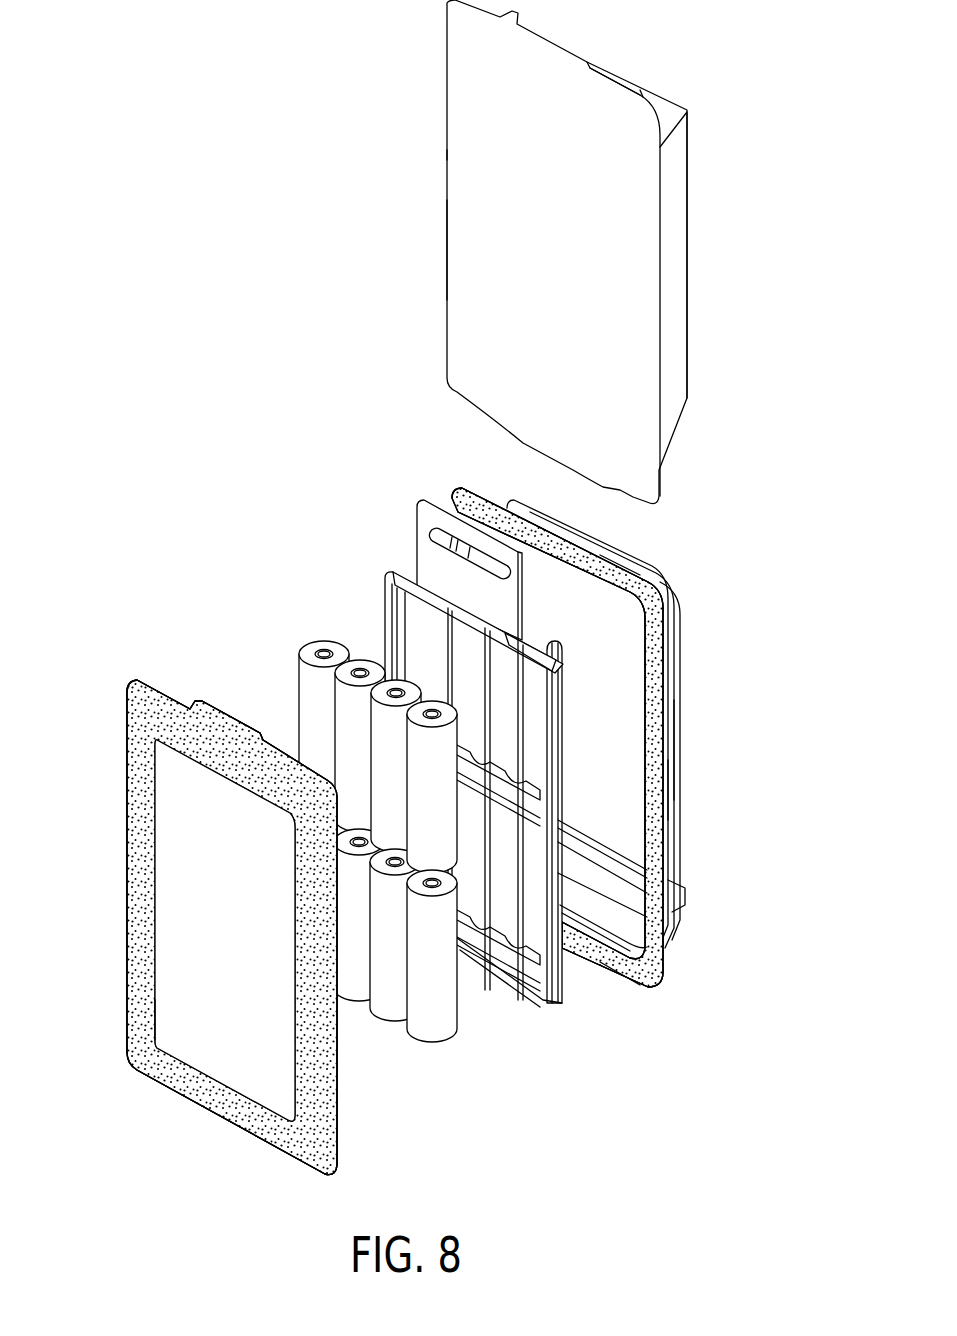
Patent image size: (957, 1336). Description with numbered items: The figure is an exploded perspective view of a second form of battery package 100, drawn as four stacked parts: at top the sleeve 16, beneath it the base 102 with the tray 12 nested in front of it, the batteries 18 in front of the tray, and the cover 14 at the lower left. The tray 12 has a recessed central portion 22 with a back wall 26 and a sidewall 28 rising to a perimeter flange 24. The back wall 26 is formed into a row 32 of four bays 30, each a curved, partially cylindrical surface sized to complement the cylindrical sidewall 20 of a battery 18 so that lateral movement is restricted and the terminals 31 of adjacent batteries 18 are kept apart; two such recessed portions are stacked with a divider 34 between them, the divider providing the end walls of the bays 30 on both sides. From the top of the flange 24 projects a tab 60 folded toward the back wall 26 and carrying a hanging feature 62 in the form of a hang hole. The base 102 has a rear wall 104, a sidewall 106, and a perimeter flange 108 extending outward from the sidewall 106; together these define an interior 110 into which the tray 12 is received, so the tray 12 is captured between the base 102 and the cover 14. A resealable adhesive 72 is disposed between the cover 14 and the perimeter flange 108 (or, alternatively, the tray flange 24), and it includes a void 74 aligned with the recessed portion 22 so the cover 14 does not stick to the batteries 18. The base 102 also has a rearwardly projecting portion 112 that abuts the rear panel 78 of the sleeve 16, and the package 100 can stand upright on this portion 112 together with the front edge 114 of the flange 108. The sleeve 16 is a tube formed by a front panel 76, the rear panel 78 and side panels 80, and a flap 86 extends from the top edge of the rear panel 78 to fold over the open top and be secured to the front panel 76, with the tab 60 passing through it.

The battery package 100 is at (245, 378).
The tray 12 is at (516, 818).
The cover 14 is at (338, 1130).
The sleeve 16 is at (690, 272).
The batteries 18 is at (353, 822).
The cylindrical sidewall 20 is at (385, 1005).
The recessed central portion 22 is at (565, 680).
The perimeter flange 24 is at (560, 965).
The back wall 26 is at (505, 930).
The sidewall 28 is at (558, 648).
The bays 30 is at (425, 635).
The terminals 31 is at (323, 652).
The row 32 is at (356, 810).
The divider 34 is at (527, 830).
The tab 60 is at (436, 526).
The hanging feature 62 is at (440, 540).
The resealable adhesive 72 is at (652, 640).
The void 74 is at (222, 1050).
The front panel 76 is at (468, 234).
The rear panel 78 is at (668, 100).
The side panels 80 is at (675, 160).
The flap 86 is at (615, 78).
The base 102 is at (682, 704).
The rear wall 104 is at (600, 605).
The sidewall 106 is at (676, 752).
The perimeter flange 108 is at (658, 790).
The interior 110 is at (612, 811).
The rearwardly projecting portion 112 is at (688, 894).
The front edge 114 is at (620, 975).